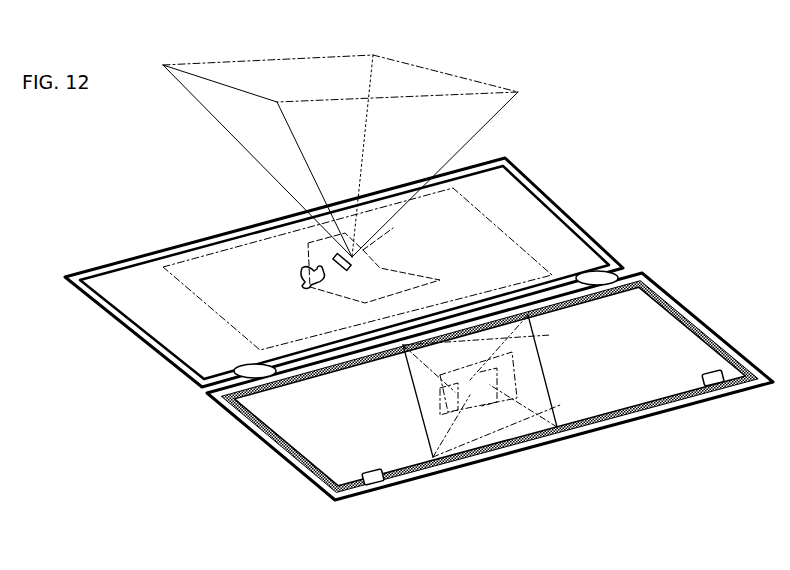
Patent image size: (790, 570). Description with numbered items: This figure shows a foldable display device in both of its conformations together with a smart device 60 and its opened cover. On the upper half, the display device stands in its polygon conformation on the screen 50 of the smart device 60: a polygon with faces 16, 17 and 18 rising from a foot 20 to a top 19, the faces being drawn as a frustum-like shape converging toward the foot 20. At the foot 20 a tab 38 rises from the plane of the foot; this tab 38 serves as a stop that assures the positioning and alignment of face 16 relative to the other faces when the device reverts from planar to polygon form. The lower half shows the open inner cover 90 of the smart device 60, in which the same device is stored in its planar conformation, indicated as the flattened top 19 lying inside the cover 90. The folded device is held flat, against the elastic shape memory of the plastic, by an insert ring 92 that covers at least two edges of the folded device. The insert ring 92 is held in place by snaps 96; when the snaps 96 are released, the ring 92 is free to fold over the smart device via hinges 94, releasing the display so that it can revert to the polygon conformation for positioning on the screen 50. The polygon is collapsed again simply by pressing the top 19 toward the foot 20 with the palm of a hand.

The face 16 is at (257, 161).
The face 17 is at (314, 179).
The face 18 is at (435, 162).
The top 19 is at (573, 357).
The foot 20 is at (374, 265).
The tab 38 is at (300, 278).
The screen 50 is at (357, 269).
The smart device 60 is at (344, 272).
The inner cover 90 is at (143, 352).
The insert ring 92 is at (300, 444).
The hinges 94 is at (262, 380).
The snaps 96 is at (377, 492).